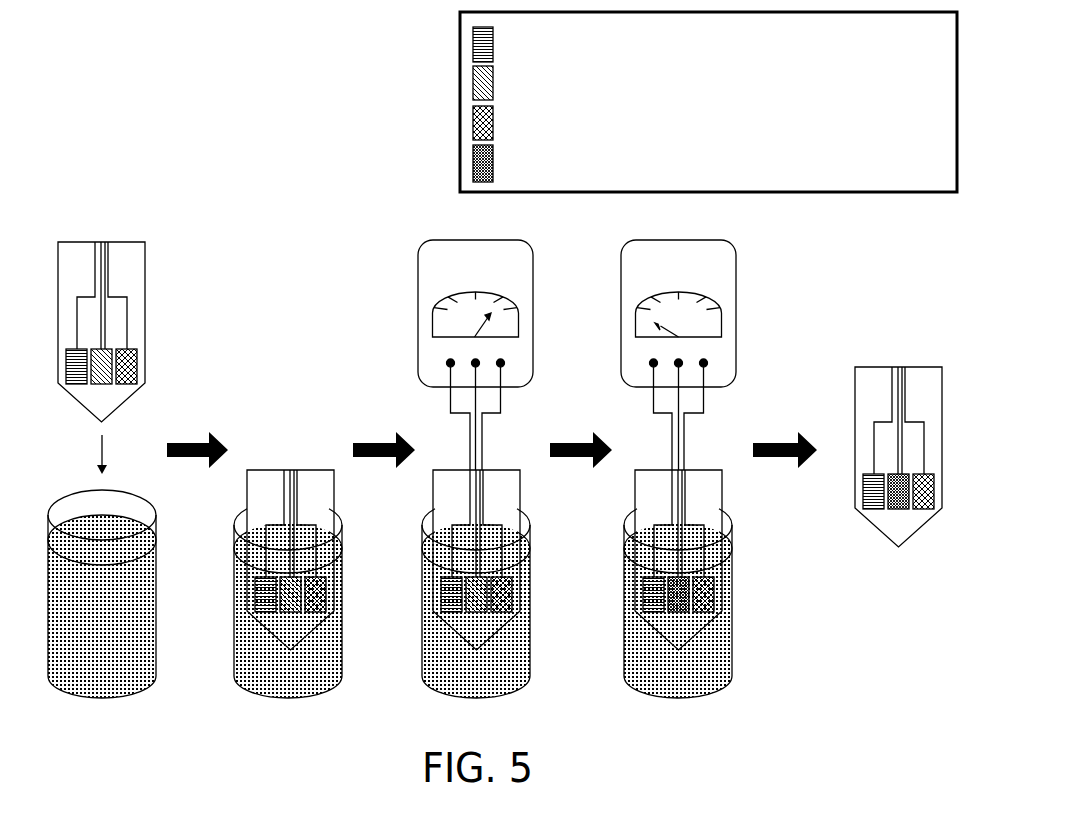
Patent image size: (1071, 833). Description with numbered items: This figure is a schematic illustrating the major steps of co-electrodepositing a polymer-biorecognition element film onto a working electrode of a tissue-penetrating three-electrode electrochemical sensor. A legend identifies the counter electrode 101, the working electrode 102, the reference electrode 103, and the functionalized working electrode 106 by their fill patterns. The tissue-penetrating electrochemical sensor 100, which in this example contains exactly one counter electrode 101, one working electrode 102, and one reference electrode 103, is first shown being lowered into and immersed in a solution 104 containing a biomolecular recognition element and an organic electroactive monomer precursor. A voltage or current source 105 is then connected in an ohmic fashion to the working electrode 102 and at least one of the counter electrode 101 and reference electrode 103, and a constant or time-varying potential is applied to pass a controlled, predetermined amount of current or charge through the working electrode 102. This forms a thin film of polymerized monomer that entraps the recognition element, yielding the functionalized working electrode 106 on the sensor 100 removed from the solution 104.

The tissue-penetrating electrochemical sensor 100 is at (500, 446).
The counter electrode 101 is at (504, 319).
The working electrode 102 is at (517, 339).
The reference electrode 103 is at (529, 359).
The solution 104 is at (390, 594).
The voltage or current source 105 is at (577, 355).
The functionalized working electrode 106 is at (708, 378).